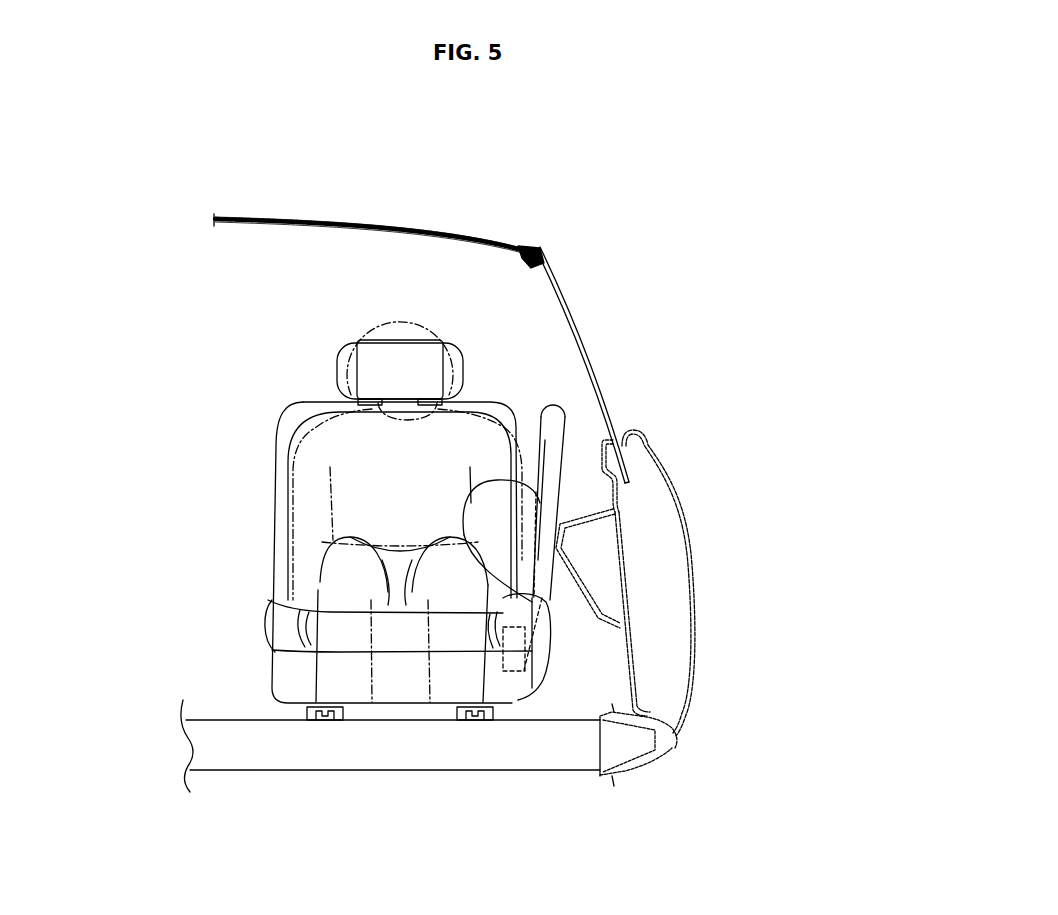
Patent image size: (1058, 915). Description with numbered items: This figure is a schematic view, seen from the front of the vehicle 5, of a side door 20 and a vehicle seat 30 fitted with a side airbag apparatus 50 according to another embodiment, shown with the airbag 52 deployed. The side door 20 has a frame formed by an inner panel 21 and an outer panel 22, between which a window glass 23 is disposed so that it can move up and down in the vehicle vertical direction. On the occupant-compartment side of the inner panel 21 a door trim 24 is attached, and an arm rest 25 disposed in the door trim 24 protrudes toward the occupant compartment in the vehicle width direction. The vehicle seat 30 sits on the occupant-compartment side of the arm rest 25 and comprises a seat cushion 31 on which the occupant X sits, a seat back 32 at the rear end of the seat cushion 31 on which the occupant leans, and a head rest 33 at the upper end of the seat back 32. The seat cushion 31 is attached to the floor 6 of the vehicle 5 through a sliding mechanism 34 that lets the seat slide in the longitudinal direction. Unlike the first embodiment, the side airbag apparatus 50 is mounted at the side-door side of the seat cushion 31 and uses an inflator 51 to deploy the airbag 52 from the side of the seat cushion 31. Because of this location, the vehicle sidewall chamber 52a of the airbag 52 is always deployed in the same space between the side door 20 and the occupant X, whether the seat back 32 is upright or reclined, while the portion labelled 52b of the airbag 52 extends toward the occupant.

The vehicle 5 is at (325, 209).
The floor 6 is at (237, 718).
The side door 20 is at (674, 516).
The inner panel 21 is at (679, 649).
The outer panel 22 is at (657, 462).
The window glass 23 is at (590, 347).
The door trim 24 is at (610, 432).
The arm rest 25 is at (567, 572).
The vehicle seat 30 is at (350, 578).
The seat cushion 31 is at (270, 605).
The seat back 32 is at (283, 482).
The head rest 33 is at (337, 368).
The sliding mechanism 34 is at (323, 722).
The side airbag apparatus 50 is at (505, 549).
The inflator 51 is at (513, 663).
The airbag 52 is at (547, 392).
The vehicle sidewall chamber 52a is at (553, 506).
The airbag chest protection portion 52b is at (494, 506).
The occupant X is at (375, 325).